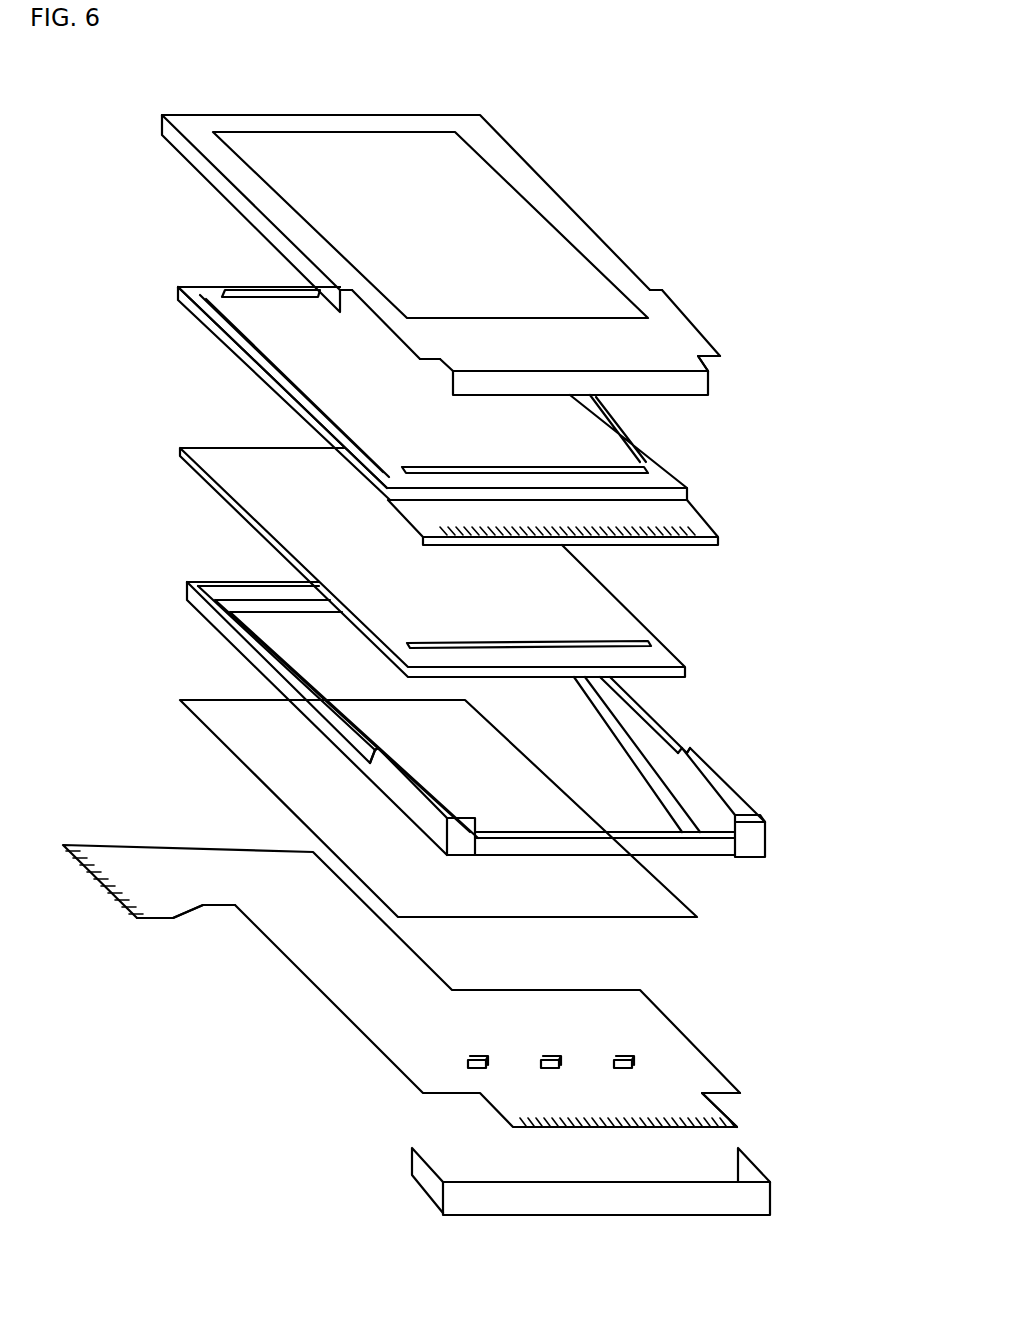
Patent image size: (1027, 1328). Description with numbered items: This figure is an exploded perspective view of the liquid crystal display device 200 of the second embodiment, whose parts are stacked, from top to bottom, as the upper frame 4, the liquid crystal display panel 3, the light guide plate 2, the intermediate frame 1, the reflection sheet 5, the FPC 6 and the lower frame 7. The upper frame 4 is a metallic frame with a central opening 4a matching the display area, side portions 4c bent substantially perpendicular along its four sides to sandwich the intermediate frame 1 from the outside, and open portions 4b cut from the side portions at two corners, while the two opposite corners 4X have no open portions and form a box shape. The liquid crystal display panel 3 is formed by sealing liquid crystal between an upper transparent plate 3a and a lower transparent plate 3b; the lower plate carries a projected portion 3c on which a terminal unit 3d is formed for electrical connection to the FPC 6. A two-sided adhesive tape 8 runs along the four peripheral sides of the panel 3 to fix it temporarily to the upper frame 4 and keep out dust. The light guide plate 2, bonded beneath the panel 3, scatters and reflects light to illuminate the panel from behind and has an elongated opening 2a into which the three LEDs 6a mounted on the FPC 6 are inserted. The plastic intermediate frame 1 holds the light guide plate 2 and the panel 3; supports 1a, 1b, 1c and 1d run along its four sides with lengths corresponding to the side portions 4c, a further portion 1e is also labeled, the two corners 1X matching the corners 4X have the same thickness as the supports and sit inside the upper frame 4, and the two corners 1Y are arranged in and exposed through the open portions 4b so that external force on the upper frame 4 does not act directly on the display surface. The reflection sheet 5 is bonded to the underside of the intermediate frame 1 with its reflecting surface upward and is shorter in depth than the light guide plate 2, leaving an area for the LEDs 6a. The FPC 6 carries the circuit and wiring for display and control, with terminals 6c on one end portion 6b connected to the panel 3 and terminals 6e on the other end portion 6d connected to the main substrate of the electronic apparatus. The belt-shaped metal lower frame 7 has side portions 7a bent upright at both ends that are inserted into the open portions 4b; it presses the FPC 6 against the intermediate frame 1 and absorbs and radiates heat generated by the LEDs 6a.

The liquid crystal display device 200 is at (374, 60).
The intermediate frame 1 is at (475, 731).
The support 1a is at (688, 830).
The support 1b is at (680, 750).
The support 1c is at (282, 606).
The support 1d is at (288, 575).
The inner strip of frame 1e is at (601, 715).
The corners of the intermediate frame 1X is at (183, 593).
The corners of the intermediate frame 1Y is at (440, 818).
The light guide plate 2 is at (446, 562).
The elongated opening 2a is at (655, 642).
The liquid crystal display panel 3 is at (443, 400).
The upper transparent plate 3a is at (177, 289).
The lower transparent plate 3b is at (207, 334).
The projected portion 3c is at (672, 514).
The terminal unit 3d is at (398, 515).
The upper frame 4 is at (424, 263).
The opening 4a is at (425, 213).
The open portions 4b is at (684, 316).
The side portions 4c is at (250, 217).
The corners of the upper frame 4X is at (163, 116).
The reflection sheet 5 is at (684, 899).
The FPC 6 is at (422, 986).
The LEDs 6a is at (636, 1052).
The end portion 6b is at (727, 1107).
The terminals 6c is at (503, 1117).
The end portion 6d is at (165, 903).
The terminals 6e is at (122, 908).
The lower frame 7 is at (565, 1202).
The side portions 7a is at (423, 1177).
The two-sided adhesive tape 8 is at (240, 284).